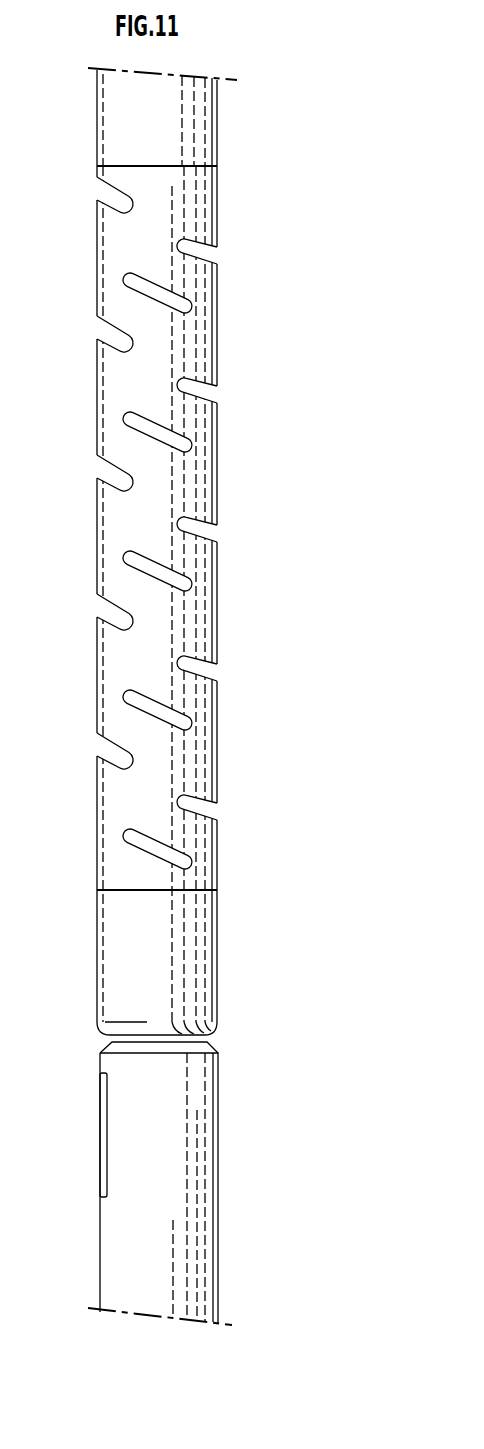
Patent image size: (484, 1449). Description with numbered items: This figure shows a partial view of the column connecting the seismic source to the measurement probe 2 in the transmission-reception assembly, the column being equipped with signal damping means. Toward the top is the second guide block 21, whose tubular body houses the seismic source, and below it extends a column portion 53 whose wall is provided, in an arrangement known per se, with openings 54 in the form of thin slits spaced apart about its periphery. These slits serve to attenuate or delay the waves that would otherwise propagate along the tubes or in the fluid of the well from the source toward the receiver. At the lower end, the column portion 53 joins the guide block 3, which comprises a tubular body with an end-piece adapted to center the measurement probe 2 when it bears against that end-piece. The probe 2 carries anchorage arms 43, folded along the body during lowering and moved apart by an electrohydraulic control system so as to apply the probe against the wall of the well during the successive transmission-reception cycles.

The second guide block 21 is at (228, 134).
The column portion 53 is at (221, 594).
The openings 54 is at (170, 713).
The guide block 3 is at (229, 960).
The measurement probe 2 is at (180, 1189).
The anchorage arms 43 is at (100, 1135).